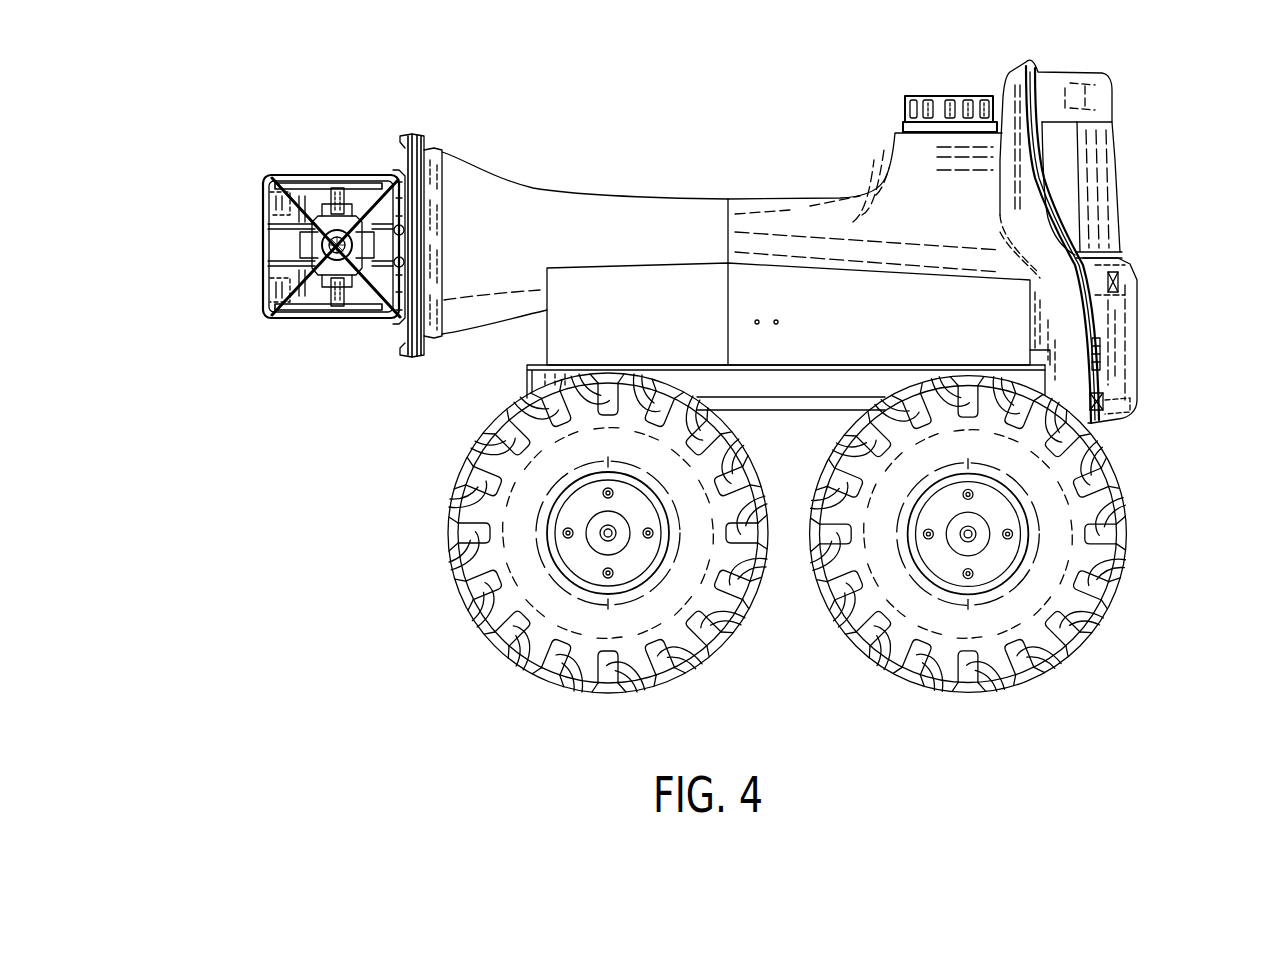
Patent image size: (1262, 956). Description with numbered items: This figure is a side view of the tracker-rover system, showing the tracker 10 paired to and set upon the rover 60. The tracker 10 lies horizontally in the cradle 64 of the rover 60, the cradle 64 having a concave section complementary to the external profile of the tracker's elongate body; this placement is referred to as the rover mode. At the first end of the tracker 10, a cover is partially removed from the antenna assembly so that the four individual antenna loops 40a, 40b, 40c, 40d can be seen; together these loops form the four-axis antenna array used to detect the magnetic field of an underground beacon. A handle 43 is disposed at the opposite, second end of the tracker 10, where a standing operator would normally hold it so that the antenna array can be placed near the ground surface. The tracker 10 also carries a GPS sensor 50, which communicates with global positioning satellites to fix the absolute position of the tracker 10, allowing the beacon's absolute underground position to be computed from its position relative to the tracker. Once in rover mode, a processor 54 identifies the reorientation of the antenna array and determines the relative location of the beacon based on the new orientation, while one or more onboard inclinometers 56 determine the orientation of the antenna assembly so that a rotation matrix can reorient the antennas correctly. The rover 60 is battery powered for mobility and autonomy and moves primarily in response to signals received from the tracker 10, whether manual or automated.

The tracker 10 is at (775, 198).
The antenna loop 40a is at (283, 177).
The antenna loop 40b is at (270, 268).
The antenna loop 40c is at (317, 291).
The antenna loop 40d is at (355, 181).
The handle 43 is at (1115, 175).
The GPS sensor 50 is at (1112, 420).
The processor 54 is at (1117, 282).
The inclinometer 56 is at (1103, 353).
The rover 60 is at (770, 603).
The cradle 64 is at (562, 333).